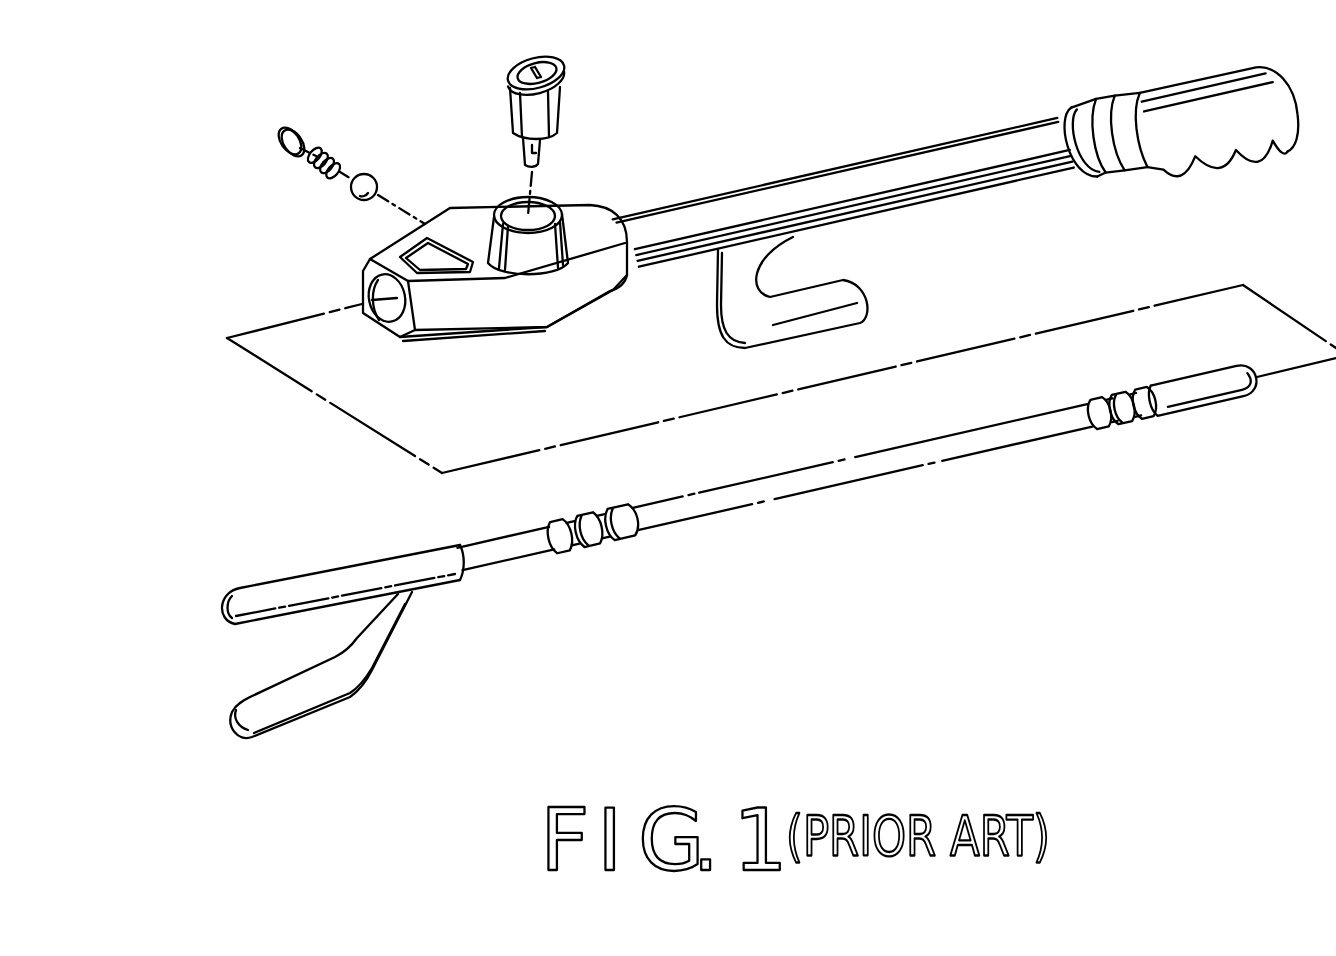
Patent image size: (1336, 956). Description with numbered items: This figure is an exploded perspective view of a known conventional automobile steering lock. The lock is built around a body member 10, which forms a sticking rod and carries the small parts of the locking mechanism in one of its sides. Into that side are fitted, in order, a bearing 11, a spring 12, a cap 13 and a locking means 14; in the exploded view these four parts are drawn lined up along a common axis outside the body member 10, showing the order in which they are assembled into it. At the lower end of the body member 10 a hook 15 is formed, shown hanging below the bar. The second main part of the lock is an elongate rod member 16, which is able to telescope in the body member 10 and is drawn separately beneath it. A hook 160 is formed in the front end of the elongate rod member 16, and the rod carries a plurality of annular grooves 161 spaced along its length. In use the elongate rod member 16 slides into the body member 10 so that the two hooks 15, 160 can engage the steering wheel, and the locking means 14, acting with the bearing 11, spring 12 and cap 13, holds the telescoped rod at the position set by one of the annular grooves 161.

The body member 10 is at (827, 171).
The bearing 11 is at (367, 175).
The spring 12 is at (327, 148).
The cap 13 is at (291, 128).
The locking means 14 is at (567, 112).
The hook 15 is at (867, 303).
The elongate rod member 16 is at (830, 497).
The hook 160 is at (372, 674).
The annular grooves 161 is at (577, 552).